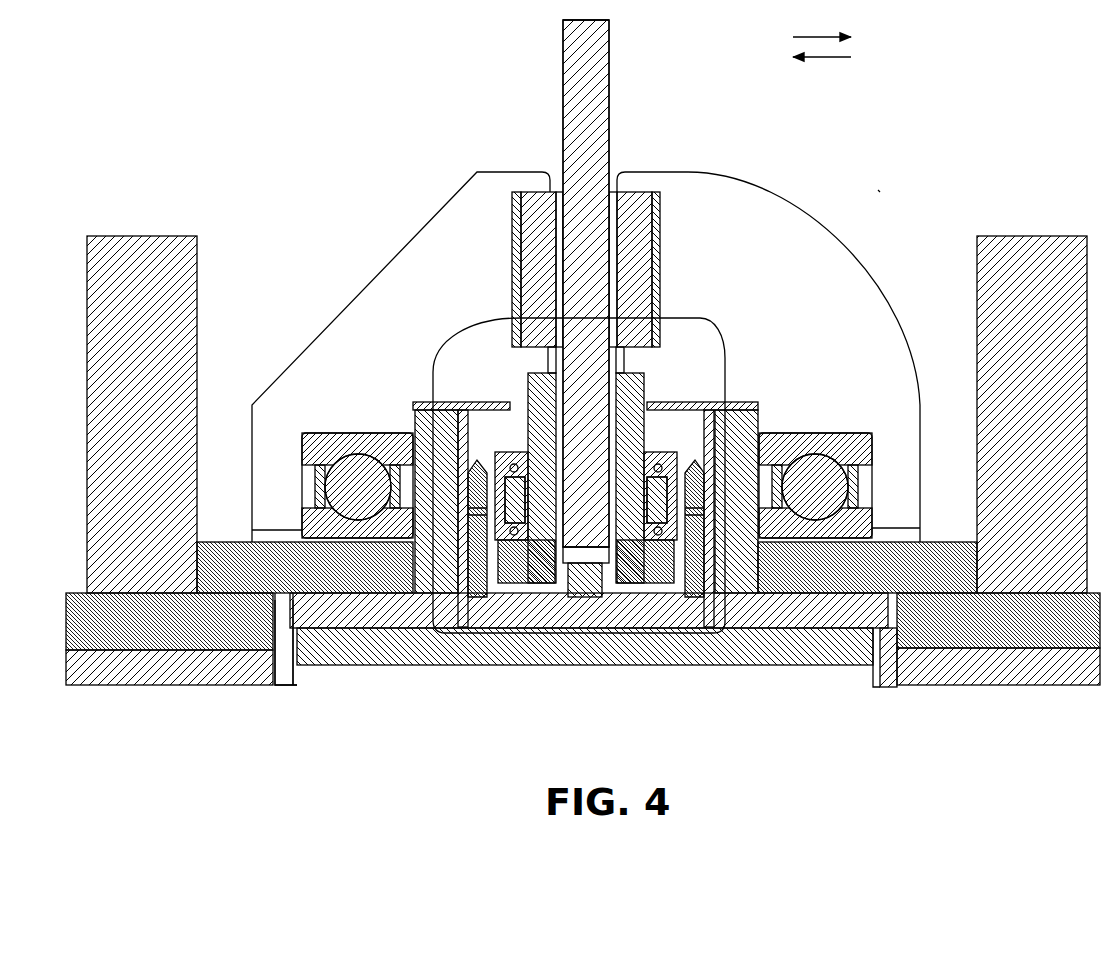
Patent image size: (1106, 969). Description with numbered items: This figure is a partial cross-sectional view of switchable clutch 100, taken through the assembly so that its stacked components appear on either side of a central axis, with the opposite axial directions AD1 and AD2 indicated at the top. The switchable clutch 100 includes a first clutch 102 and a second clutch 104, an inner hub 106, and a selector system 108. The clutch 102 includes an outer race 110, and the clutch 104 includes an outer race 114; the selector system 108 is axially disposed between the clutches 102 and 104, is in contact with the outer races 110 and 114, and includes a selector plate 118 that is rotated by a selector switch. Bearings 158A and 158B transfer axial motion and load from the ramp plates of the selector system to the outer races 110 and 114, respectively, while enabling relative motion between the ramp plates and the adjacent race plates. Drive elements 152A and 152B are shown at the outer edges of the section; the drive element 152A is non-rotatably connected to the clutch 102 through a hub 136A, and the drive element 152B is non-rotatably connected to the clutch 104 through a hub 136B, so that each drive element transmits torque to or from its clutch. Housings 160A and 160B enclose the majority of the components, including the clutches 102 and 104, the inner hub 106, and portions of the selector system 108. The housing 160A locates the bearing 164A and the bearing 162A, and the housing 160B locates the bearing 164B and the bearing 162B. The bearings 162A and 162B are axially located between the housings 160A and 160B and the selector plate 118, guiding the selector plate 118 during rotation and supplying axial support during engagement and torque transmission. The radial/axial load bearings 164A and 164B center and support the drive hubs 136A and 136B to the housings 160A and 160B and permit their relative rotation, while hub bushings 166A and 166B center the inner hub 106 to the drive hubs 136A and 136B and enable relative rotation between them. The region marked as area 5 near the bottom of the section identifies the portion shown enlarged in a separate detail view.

The area 5 is at (560, 637).
The switchable clutch 100 is at (880, 190).
The clutch 102 is at (450, 397).
The clutch 104 is at (680, 388).
The inner hub 106 is at (787, 652).
The selector system 108 is at (538, 75).
The outer race 110 is at (477, 378).
The outer race 114 is at (700, 395).
The selector plate 118 is at (600, 15).
The hub 136A is at (137, 633).
The hub 136B is at (1000, 615).
The drive element 152A is at (140, 236).
The drive element 152B is at (1040, 236).
The bearing 158A is at (513, 623).
The bearing 158B is at (655, 600).
The housing 160A is at (478, 172).
The housing 160B is at (690, 175).
The bearing 162A is at (536, 195).
The bearing 162B is at (633, 202).
The radial/axial load bearing 164A is at (355, 430).
The radial/axial load bearing 164B is at (818, 430).
The hub bushing 166A is at (382, 607).
The hub bushing 166B is at (840, 615).
The axial direction AD1 is at (820, 37).
The axial direction AD2 is at (830, 57).